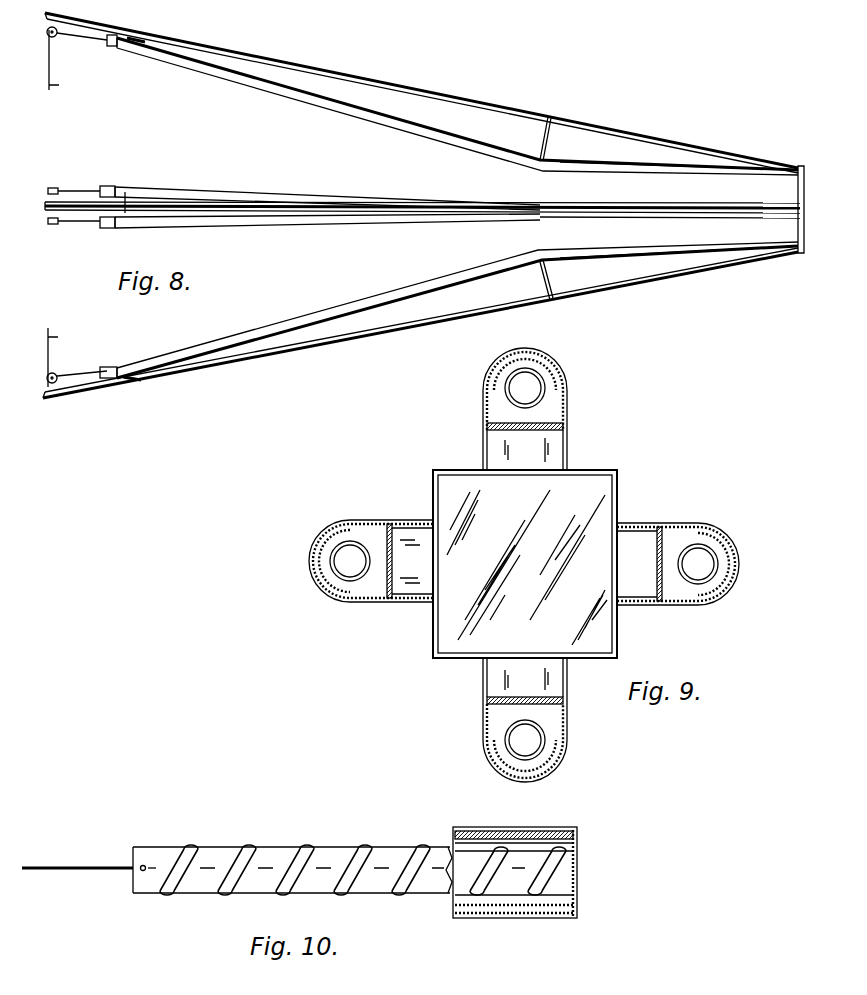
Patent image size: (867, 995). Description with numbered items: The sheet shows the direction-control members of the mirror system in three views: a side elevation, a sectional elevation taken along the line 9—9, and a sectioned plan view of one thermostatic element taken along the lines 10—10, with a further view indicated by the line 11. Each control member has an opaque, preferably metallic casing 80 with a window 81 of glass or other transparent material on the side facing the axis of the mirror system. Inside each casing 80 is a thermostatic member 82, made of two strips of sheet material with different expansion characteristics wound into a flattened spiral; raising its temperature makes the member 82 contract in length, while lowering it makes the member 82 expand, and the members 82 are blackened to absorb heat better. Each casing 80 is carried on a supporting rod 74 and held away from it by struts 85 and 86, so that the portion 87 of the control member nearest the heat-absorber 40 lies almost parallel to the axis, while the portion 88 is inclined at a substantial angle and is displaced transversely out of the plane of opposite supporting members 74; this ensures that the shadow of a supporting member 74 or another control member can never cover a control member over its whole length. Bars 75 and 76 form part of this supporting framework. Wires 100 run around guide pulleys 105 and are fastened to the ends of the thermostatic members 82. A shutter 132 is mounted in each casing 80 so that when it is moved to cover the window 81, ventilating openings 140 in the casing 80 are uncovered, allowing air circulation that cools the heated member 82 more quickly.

In FIG. 8, the section line 9 is at (622, 146).
In FIG. 9, the section line 10 is at (635, 578).
In FIG. 8, the view direction of FIG. 11 is at (537, 164).
In FIG. 8, the heat-absorber 40 is at (799, 193).
In FIG. 9, the heat-absorber 40 is at (505, 527).
In FIG. 8, the supporting rod 74 is at (520, 112).
In FIG. 8, the lower diagonal bar 75 is at (426, 282).
In FIG. 8, the upper diagonal bar 76 is at (368, 124).
In FIG. 9, the casing 80 is at (483, 404).
In FIG. 10, the casing 80 is at (580, 848).
In FIG. 9, the window 81 is at (530, 456).
In FIG. 10, the window 81 is at (492, 833).
In FIG. 8, the thermostatic member 82 is at (113, 47).
In FIG. 9, the thermostatic member 82 is at (545, 400).
In FIG. 10, the thermostatic member 82 is at (372, 855).
In FIG. 8, the strut 85 is at (542, 134).
In FIG. 8, the strut 86 is at (143, 37).
In FIG. 8, the portion of control member 87 is at (722, 207).
In FIG. 8, the portion of control member 88 is at (288, 92).
In FIG. 8, the wire 100 is at (80, 262).
In FIG. 10, the wire 100 is at (68, 866).
In FIG. 8, the guide pulley 105 is at (58, 37).
In FIG. 9, the shutter 132 is at (550, 362).
In FIG. 10, the shutter 132 is at (483, 910).
In FIG. 9, the ventilating opening 140 is at (522, 352).
In FIG. 10, the ventilating opening 140 is at (548, 918).